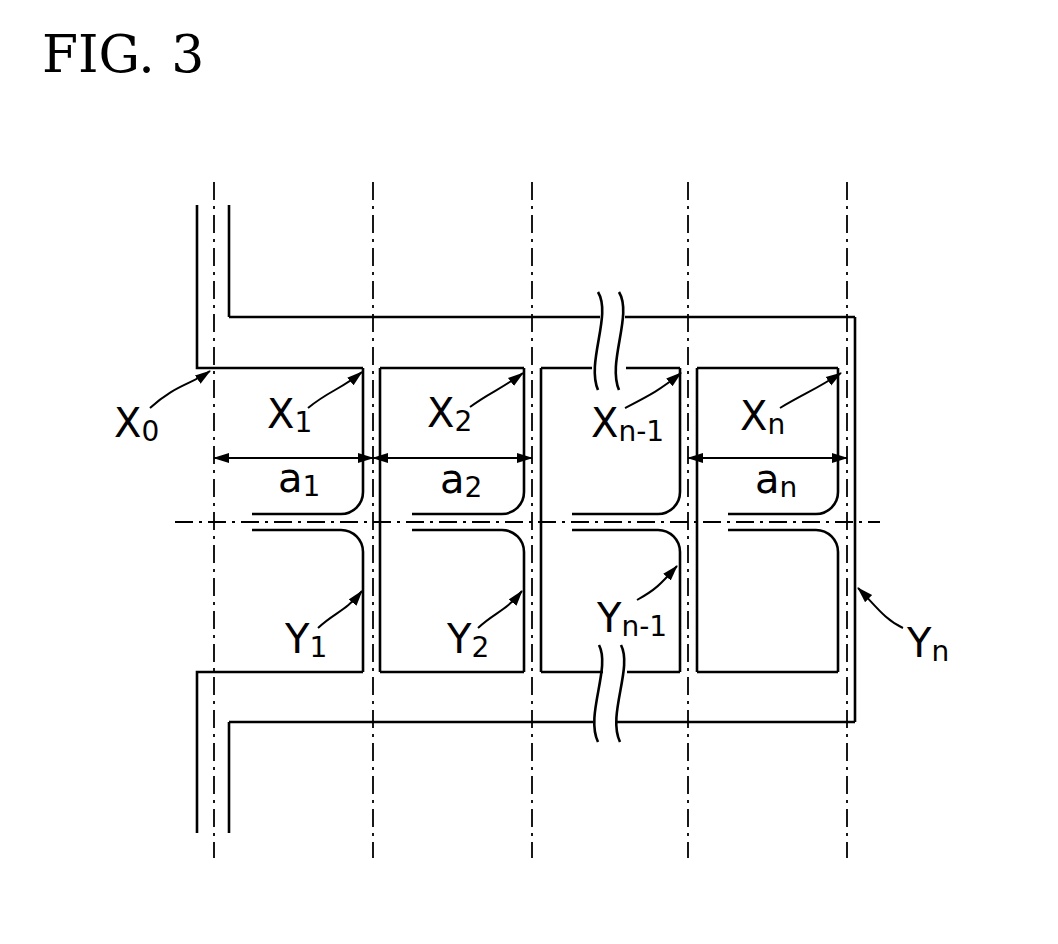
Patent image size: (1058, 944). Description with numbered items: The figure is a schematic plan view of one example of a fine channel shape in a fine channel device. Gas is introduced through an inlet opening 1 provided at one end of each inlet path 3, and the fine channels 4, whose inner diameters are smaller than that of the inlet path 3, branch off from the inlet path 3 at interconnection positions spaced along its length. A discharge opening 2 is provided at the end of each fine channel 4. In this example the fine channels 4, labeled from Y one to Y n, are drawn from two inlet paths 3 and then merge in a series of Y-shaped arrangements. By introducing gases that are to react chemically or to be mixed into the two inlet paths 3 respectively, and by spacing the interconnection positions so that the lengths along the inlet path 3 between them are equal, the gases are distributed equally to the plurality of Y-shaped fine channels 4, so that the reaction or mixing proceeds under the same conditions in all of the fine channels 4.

The inlet opening 1 is at (232, 196).
The discharge opening 2 is at (529, 520).
The inlet path 3 is at (497, 315).
The fine channel 4 is at (858, 557).